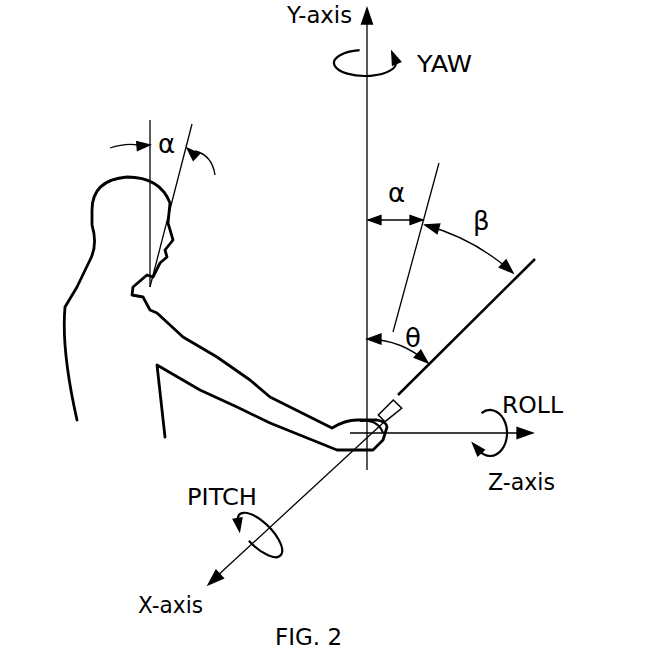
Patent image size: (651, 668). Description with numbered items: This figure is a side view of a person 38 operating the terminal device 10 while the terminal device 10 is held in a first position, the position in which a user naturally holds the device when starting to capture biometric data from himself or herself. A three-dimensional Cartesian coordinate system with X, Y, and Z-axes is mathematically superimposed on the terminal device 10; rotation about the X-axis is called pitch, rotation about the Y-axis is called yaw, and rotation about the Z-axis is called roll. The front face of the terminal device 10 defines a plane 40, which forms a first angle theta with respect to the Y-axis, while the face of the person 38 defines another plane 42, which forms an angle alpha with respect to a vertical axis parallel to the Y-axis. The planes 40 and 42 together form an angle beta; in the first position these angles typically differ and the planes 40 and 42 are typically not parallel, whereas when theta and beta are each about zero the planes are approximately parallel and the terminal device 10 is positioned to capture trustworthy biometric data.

The terminal device 10 is at (403, 407).
The person 38 is at (188, 238).
The plane 40 is at (493, 305).
The plane 42 is at (190, 137).